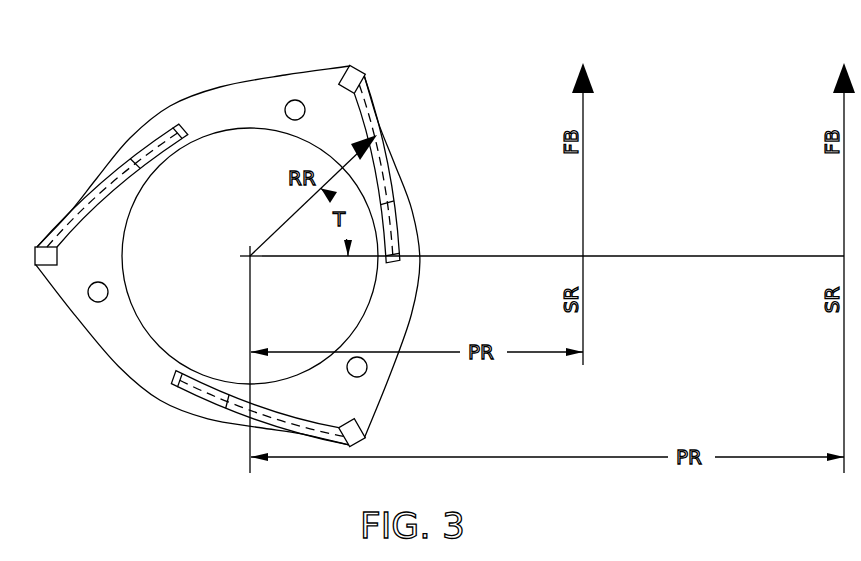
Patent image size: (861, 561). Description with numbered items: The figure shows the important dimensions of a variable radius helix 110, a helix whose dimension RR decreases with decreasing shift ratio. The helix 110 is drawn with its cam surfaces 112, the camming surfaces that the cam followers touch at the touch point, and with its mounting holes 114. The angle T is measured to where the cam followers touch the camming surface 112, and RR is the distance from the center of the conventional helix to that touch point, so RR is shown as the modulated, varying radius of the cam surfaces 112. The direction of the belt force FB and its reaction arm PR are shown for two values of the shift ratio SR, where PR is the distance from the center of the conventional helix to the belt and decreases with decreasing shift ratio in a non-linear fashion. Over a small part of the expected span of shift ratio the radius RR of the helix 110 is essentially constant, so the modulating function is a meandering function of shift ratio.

The variable radius helix 110 is at (140, 448).
The camming surface 112 is at (370, 98).
The mounting holes 114 is at (293, 106).